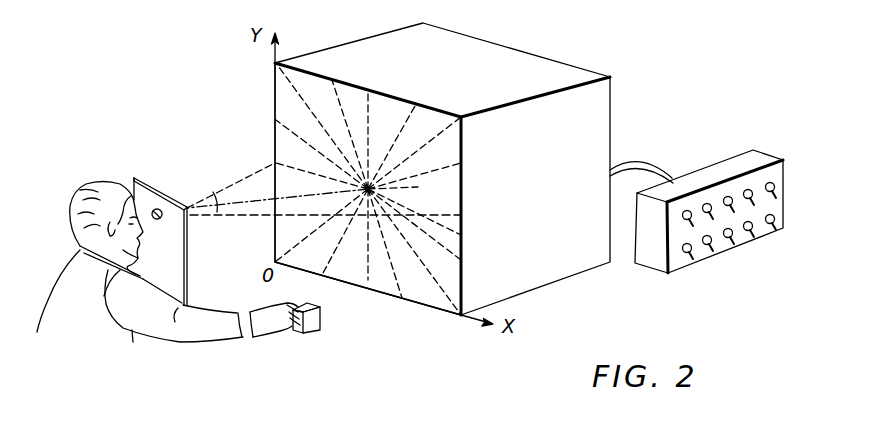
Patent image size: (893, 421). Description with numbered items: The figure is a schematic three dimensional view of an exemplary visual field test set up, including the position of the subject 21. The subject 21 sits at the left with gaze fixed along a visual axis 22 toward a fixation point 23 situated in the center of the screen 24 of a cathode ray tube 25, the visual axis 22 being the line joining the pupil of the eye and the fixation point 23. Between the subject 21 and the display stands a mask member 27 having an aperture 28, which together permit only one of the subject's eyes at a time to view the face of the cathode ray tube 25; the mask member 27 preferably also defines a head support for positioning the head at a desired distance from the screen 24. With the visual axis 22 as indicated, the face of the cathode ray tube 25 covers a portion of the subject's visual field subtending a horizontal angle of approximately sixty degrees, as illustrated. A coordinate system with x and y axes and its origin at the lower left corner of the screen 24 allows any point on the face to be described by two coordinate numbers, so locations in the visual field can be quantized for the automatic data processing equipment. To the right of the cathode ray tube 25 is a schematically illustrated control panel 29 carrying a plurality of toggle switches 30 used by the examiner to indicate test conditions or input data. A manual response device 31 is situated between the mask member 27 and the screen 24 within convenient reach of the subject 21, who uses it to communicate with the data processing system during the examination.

The subject 21 is at (63, 284).
The visual axis 22 is at (238, 183).
The fixation point 23 is at (324, 189).
The screen 24 is at (422, 292).
The cathode ray tube 25 is at (607, 108).
The mask member 27 is at (177, 282).
The aperture 28 is at (160, 208).
The control panel 29 is at (763, 160).
The toggle switches 30 is at (748, 230).
The manual response device 31 is at (297, 333).